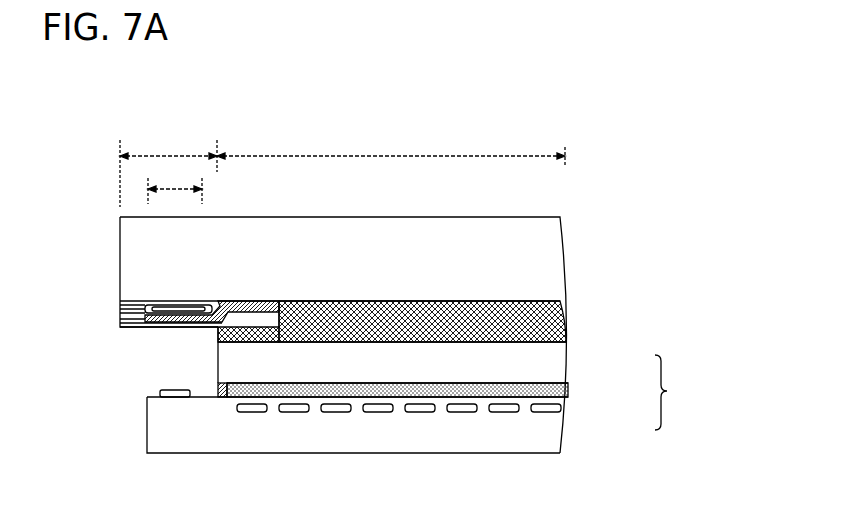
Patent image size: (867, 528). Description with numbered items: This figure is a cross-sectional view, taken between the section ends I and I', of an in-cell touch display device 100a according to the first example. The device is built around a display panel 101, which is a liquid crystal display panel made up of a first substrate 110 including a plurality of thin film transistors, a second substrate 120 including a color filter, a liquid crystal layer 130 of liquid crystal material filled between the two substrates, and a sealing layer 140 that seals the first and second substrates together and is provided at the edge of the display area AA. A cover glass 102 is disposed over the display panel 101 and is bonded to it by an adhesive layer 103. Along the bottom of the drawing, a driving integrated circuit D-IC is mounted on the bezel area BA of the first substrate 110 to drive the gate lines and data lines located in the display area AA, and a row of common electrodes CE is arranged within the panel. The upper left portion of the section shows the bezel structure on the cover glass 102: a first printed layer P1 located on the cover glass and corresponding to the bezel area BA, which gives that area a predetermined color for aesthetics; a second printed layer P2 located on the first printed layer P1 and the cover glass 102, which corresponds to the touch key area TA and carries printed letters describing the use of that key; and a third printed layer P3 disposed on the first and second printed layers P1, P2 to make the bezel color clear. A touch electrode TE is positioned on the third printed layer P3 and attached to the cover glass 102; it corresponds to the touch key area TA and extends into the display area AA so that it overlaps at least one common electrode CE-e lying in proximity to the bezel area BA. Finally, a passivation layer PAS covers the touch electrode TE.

The in-cell touch display device 100a is at (100, 126).
The cover glass 102 is at (565, 262).
The adhesive layer 103 is at (566, 318).
The second substrate 120 is at (568, 353).
The liquid crystal layer 130 is at (569, 387).
The first substrate 110 is at (568, 420).
The display panel 101 is at (678, 392).
The sealing layer 140 is at (218, 388).
The driving integrated circuit D-IC is at (160, 393).
The common electrode CE is at (378, 412).
The common electrode CE-e is at (253, 412).
The first printed layer P1 is at (138, 300).
The second printed layer P2 is at (173, 299).
The third printed layer P3 is at (120, 305).
The touch electrode TE is at (255, 301).
The passivation layer PAS is at (120, 326).
The bezel area BA is at (168, 171).
The display area AA is at (391, 150).
The touch key area TA is at (175, 186).
The section line start I is at (147, 471).
The section line end I' is at (560, 471).